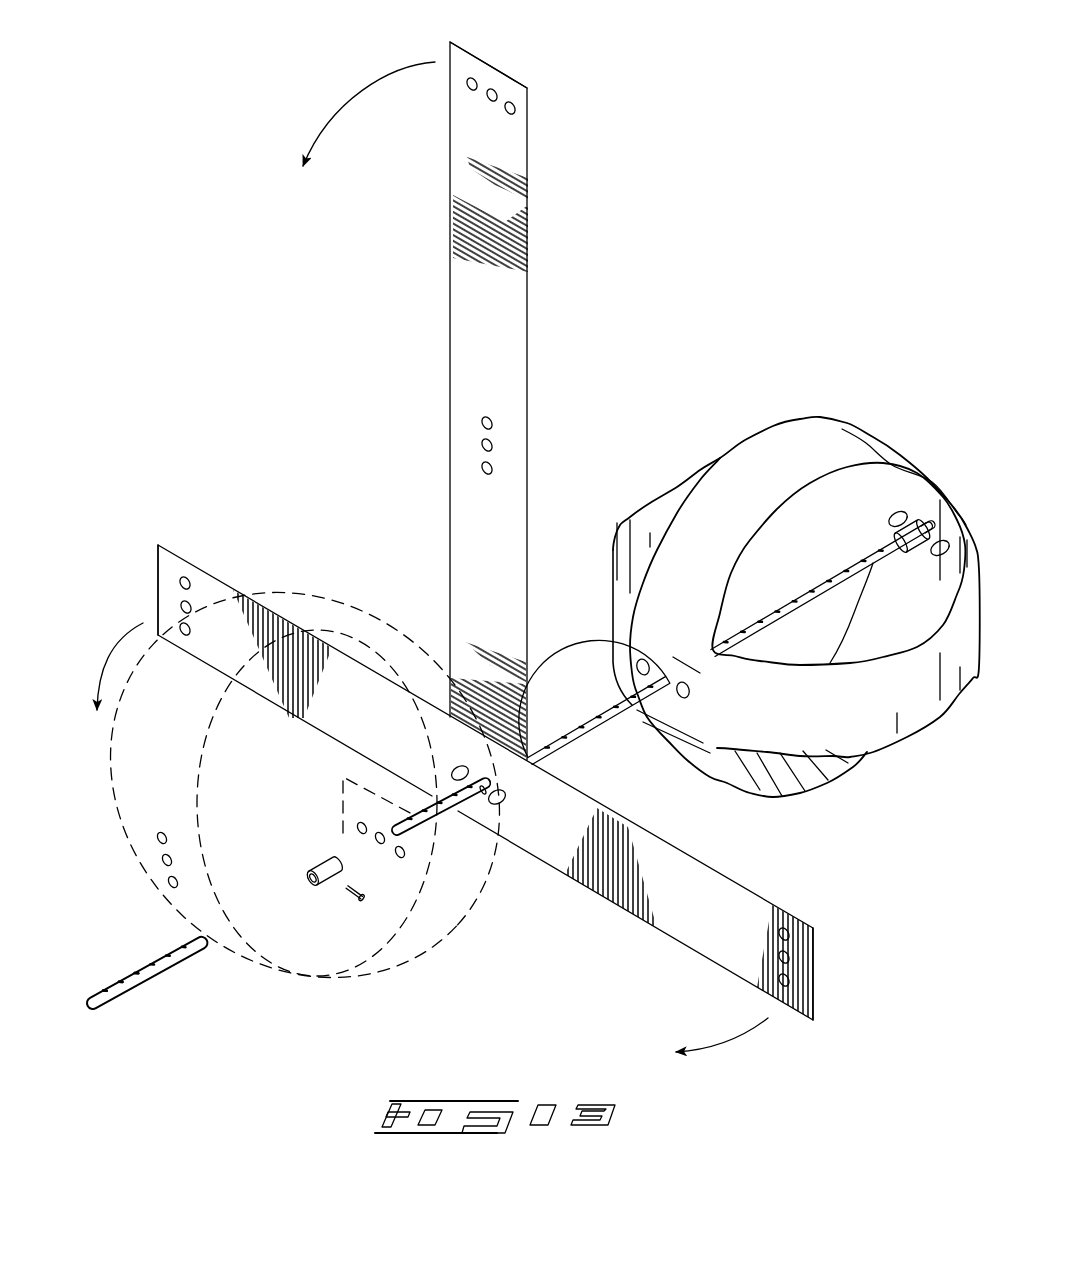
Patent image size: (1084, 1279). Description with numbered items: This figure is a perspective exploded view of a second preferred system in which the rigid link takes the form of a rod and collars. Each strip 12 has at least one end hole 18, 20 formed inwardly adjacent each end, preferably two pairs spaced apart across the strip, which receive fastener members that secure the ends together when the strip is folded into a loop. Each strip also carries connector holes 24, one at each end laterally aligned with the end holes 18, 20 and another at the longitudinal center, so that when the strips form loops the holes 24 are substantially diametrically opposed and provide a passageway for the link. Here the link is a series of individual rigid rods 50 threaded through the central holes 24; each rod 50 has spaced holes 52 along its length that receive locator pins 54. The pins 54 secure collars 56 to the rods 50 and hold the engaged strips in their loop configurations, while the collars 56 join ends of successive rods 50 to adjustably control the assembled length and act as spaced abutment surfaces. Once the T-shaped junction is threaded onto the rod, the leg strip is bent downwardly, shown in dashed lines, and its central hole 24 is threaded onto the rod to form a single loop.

The strip 12 is at (770, 422).
The end hole 18 is at (789, 978).
The end hole 20 is at (506, 110).
The hole 24 is at (492, 86).
The rod 50 is at (575, 727).
The spaced holes 52 is at (143, 987).
The locator pin 54 is at (482, 796).
The collar 56 is at (916, 548).